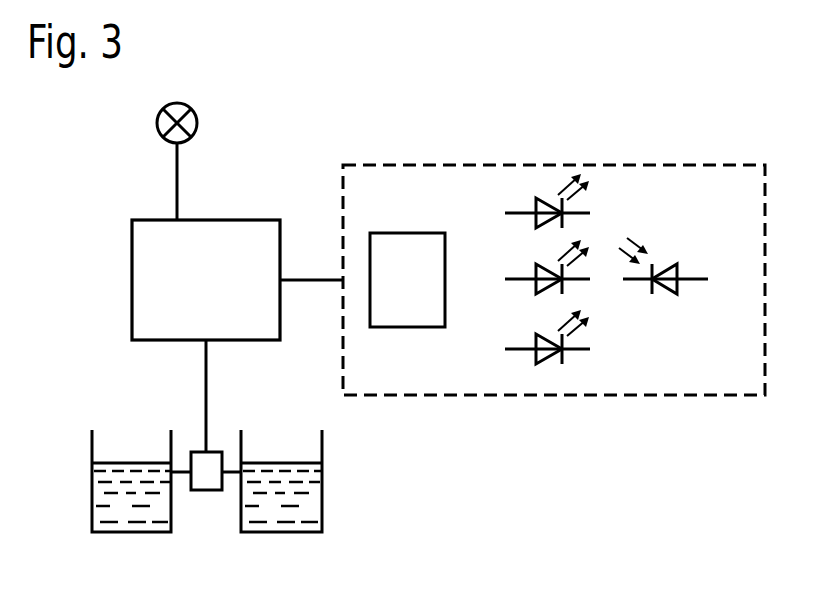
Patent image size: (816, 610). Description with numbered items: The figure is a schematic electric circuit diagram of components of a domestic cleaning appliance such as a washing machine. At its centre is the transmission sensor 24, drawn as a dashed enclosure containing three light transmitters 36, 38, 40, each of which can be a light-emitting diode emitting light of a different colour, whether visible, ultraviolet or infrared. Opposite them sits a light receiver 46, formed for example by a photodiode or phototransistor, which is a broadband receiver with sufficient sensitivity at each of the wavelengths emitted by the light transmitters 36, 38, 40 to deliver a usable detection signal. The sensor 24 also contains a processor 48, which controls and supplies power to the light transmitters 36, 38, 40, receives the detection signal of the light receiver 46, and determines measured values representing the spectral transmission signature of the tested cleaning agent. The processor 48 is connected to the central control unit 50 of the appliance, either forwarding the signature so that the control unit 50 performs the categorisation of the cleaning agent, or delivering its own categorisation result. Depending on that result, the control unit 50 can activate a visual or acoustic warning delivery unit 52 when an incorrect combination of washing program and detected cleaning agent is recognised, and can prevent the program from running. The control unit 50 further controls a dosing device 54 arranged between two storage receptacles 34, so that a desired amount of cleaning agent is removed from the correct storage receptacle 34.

The transmission sensor 24 is at (687, 165).
The storage receptacle 34 is at (92, 500).
The light transmitter 36 is at (553, 355).
The light transmitter 38 is at (536, 287).
The light transmitter 40 is at (550, 200).
The light receiver 46 is at (663, 267).
The processor 48 is at (408, 233).
The central control unit 50 is at (131, 280).
The warning delivery unit 52 is at (157, 122).
The dosing device 54 is at (205, 490).